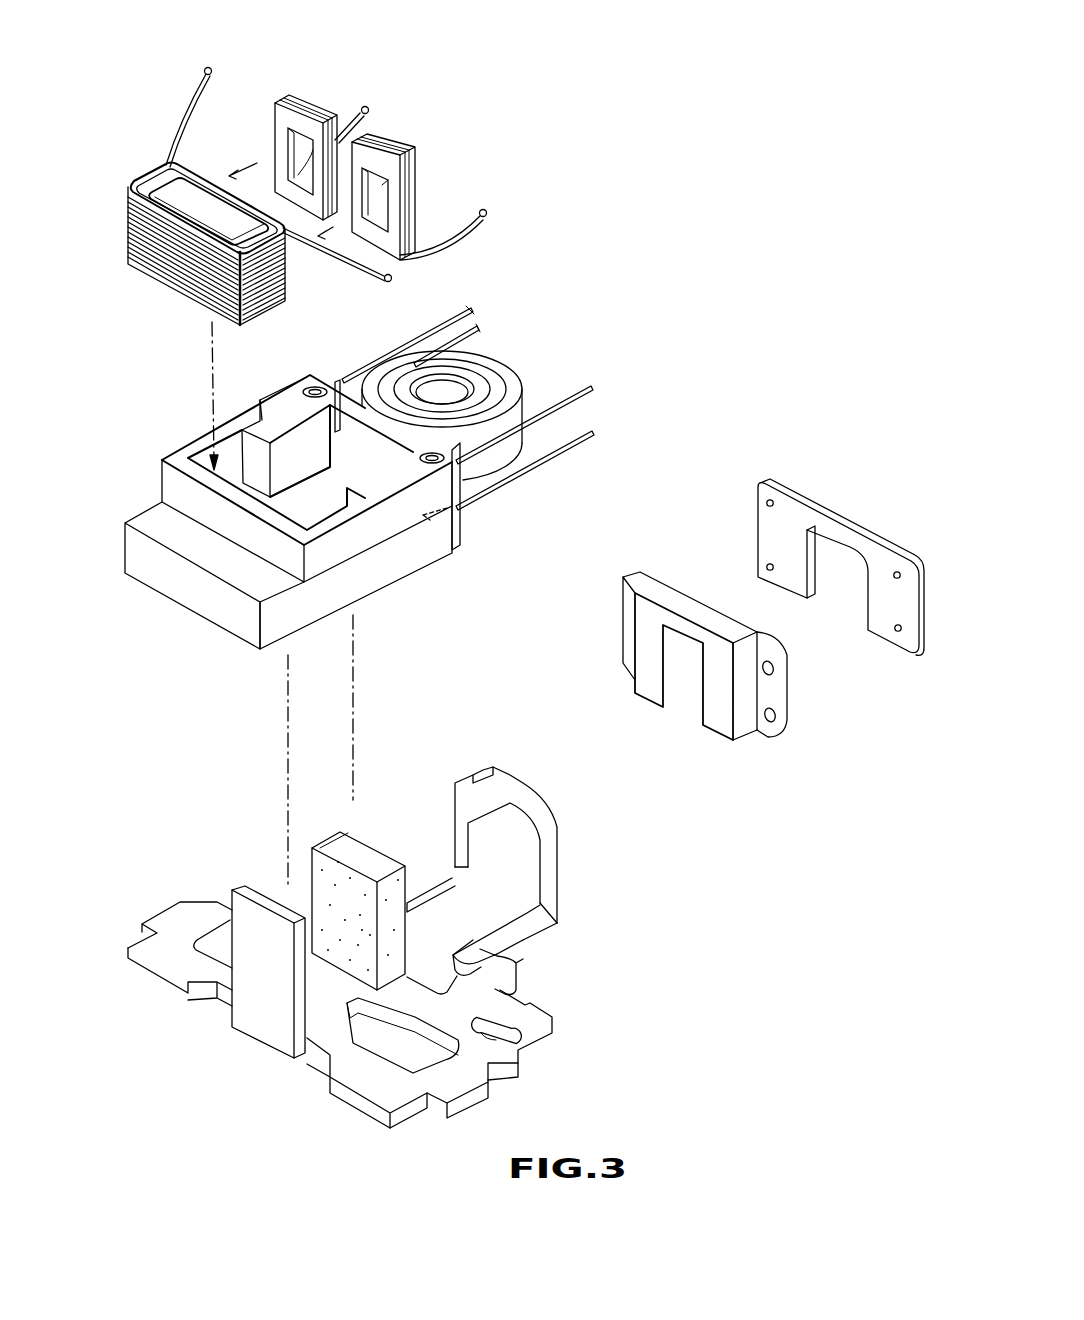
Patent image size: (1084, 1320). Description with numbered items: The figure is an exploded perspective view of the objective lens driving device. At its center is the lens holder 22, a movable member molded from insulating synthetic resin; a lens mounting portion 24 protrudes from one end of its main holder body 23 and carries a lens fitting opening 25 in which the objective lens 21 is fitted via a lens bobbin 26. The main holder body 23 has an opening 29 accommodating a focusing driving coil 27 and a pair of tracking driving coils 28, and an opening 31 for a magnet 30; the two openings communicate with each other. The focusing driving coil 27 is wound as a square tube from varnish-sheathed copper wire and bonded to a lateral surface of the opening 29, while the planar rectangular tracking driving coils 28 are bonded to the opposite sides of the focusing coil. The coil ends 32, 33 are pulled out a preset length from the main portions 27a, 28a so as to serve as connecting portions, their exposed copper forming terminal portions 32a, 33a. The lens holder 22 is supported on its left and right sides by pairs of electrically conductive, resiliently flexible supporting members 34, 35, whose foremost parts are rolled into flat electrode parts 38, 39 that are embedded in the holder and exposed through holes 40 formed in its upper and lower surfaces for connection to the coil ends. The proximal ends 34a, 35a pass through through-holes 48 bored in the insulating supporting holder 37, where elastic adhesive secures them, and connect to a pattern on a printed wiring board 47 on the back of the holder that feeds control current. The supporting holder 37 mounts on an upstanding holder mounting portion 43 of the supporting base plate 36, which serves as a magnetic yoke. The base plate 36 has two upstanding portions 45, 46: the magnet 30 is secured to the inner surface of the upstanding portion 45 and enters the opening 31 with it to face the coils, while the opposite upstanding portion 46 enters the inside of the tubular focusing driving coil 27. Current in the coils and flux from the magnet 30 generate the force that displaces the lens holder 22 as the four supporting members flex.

The objective lens 21 is at (427, 392).
The lens holder 22 is at (390, 567).
The main holder body 23 is at (175, 440).
The lens mounting portion 24 is at (512, 390).
The lens fitting opening 25 is at (495, 352).
The lens bobbin 26 is at (515, 368).
The focusing driving coil 27 is at (128, 185).
The main portion of focusing driving coil 27a is at (142, 262).
The tracking driving coils 28 is at (300, 100).
The main portion of tracking driving coil 28a is at (275, 142).
The coil-mounting opening 29 is at (243, 455).
The magnet 30 is at (312, 848).
The magnet opening 31 is at (330, 395).
The coil end 32 is at (186, 108).
The terminal portion 32a is at (208, 67).
The coil end 33 is at (352, 118).
The terminal portion 33a is at (368, 108).
The supporting member 34 is at (424, 330).
The proximal end of supporting member 34a is at (472, 308).
The supporting member 35 is at (478, 326).
The proximal end of supporting member 35a is at (477, 340).
The supporting base plate 36 is at (357, 1102).
The supporting holder 37 is at (657, 597).
The electrode part 38 is at (335, 392).
The electrode part 39 is at (432, 522).
The holes 40 is at (312, 388).
The holder mounting portion 43 is at (557, 842).
The upstanding portion 45 is at (360, 855).
The upstanding portion 46 is at (235, 915).
The printed wiring board 47 is at (823, 500).
The through-holes 48 is at (778, 676).